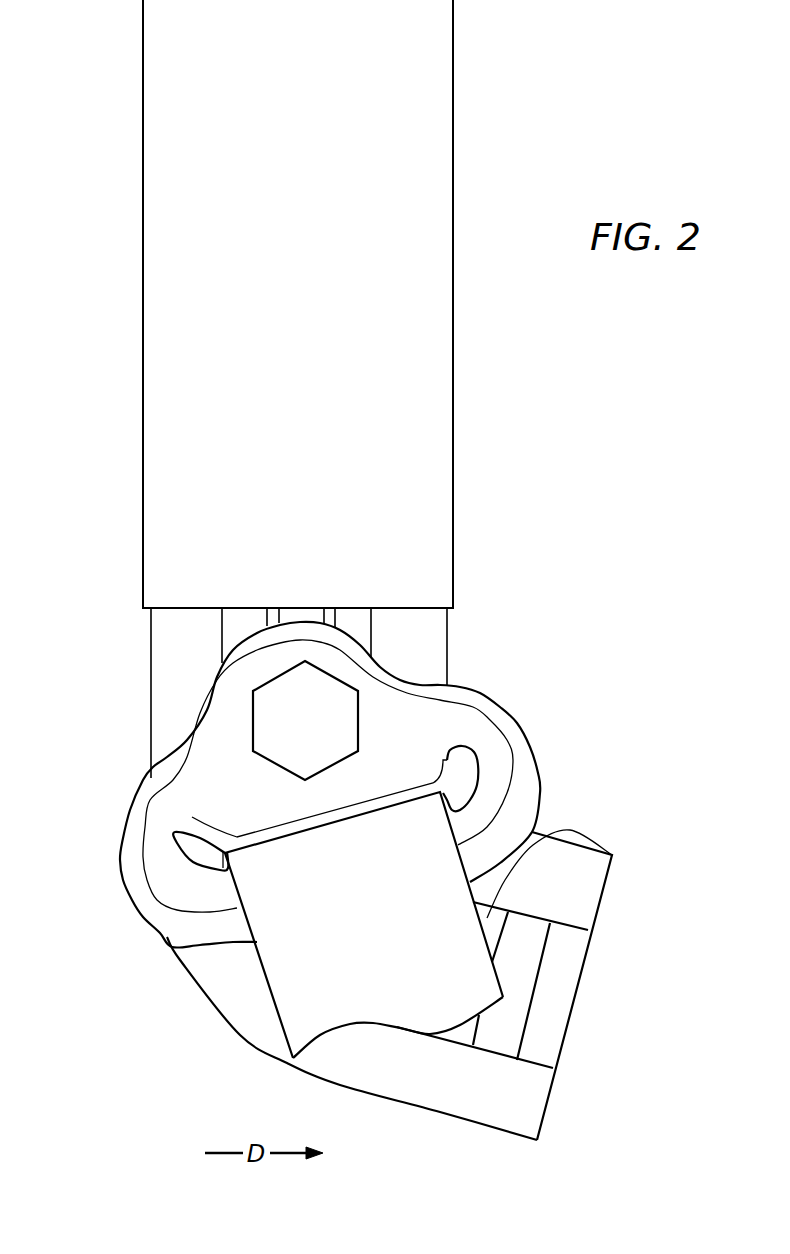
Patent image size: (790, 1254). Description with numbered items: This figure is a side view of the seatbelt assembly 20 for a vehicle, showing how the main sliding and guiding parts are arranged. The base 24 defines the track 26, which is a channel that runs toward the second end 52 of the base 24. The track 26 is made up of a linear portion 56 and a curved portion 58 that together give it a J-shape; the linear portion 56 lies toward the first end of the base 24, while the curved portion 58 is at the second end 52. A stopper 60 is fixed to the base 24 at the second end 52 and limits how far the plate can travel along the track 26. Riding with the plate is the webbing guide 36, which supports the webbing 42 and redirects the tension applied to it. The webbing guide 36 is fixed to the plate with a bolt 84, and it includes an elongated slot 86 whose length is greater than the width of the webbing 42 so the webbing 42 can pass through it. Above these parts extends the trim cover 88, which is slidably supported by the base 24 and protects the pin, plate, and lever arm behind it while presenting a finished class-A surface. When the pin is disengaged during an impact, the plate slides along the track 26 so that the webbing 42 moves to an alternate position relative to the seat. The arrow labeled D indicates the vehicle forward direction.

The seatbelt assembly 20 is at (553, 463).
The base 24 is at (175, 673).
The track 26 is at (533, 840).
The webbing guide 36 is at (497, 727).
The webbing 42 is at (303, 965).
The second end 52 is at (503, 1110).
The linear portion 56 is at (177, 644).
The curved portion 58 is at (247, 1012).
The stopper 60 is at (520, 955).
The bolt 84 is at (333, 718).
The slot 86 is at (463, 778).
The trim cover 88 is at (188, 199).